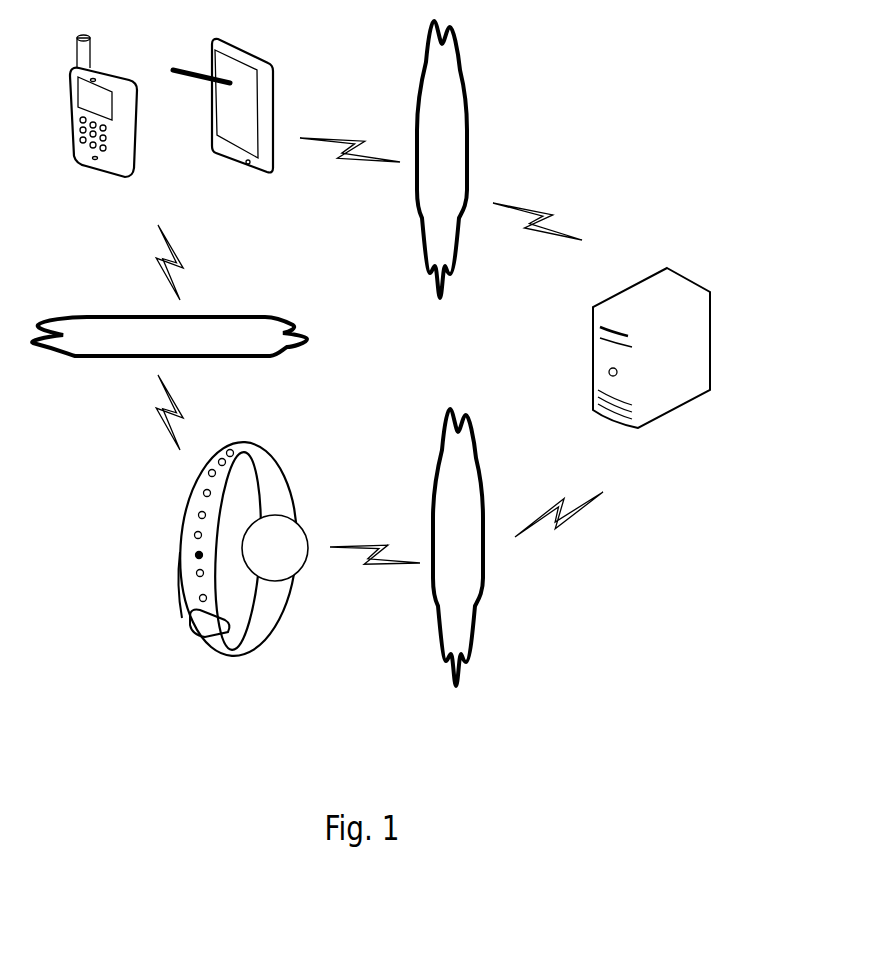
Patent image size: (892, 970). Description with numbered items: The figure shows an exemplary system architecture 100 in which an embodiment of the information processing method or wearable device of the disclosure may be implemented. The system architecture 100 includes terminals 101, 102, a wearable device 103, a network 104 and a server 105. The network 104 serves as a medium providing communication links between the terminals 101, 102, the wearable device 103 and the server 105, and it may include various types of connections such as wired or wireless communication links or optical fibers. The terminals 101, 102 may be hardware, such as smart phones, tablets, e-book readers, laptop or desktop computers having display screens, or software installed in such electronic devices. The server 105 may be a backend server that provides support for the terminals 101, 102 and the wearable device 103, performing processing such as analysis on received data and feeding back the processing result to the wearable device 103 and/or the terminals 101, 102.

The system architecture 100 is at (602, 100).
The terminal 101 is at (103, 124).
The terminal 102 is at (223, 124).
The wearable device 103 is at (241, 569).
The network 104 is at (257, 353).
The server 105 is at (651, 371).